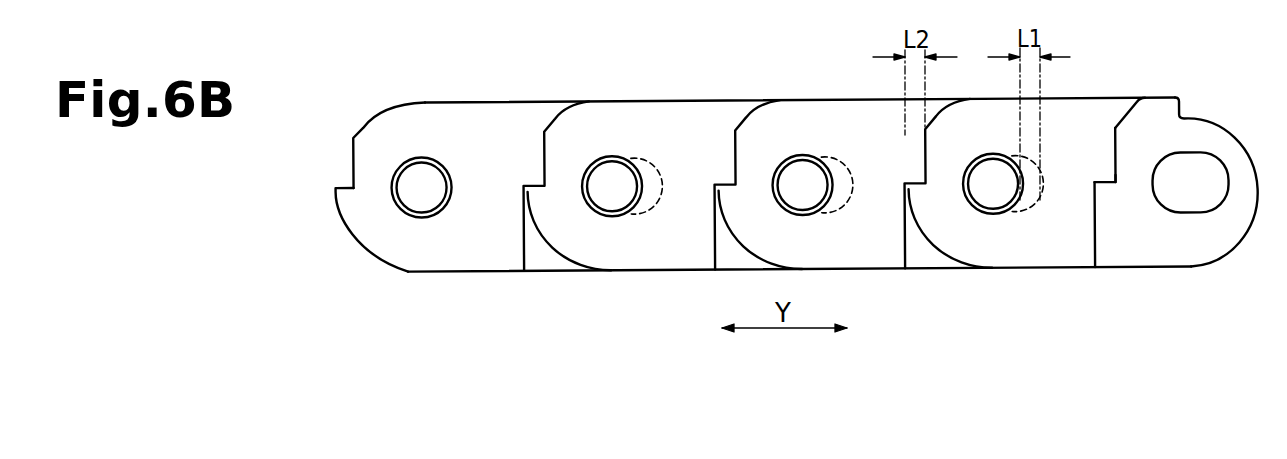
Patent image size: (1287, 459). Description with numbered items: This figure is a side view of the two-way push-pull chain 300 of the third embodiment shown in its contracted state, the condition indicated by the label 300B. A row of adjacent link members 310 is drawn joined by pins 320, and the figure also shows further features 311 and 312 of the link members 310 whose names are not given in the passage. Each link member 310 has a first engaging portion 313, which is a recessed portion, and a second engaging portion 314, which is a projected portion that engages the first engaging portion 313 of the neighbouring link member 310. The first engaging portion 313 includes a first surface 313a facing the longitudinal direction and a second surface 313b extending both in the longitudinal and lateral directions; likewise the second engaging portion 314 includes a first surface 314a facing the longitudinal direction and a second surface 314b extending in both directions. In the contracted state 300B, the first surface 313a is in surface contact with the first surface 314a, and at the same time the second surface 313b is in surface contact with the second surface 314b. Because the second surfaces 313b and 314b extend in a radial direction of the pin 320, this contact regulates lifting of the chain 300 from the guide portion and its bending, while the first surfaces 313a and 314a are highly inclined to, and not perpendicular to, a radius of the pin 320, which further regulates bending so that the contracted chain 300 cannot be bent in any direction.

The contracted state of the two-way push-pull chain 300B is at (796, 141).
The two-way push-pull chain 300 is at (796, 141).
The link member 310 is at (758, 185).
The pin hole 311 is at (421, 187).
The hole (elongated) 312 is at (930, 184).
The first engaging portion 313 is at (380, 188).
The first surface 313a is at (389, 145).
The second surface 313b is at (372, 230).
The second engaging portion 314 is at (1120, 182).
The first surface 314a is at (1130, 113).
The second surface 314b is at (1104, 178).
The pin 320 is at (421, 187).